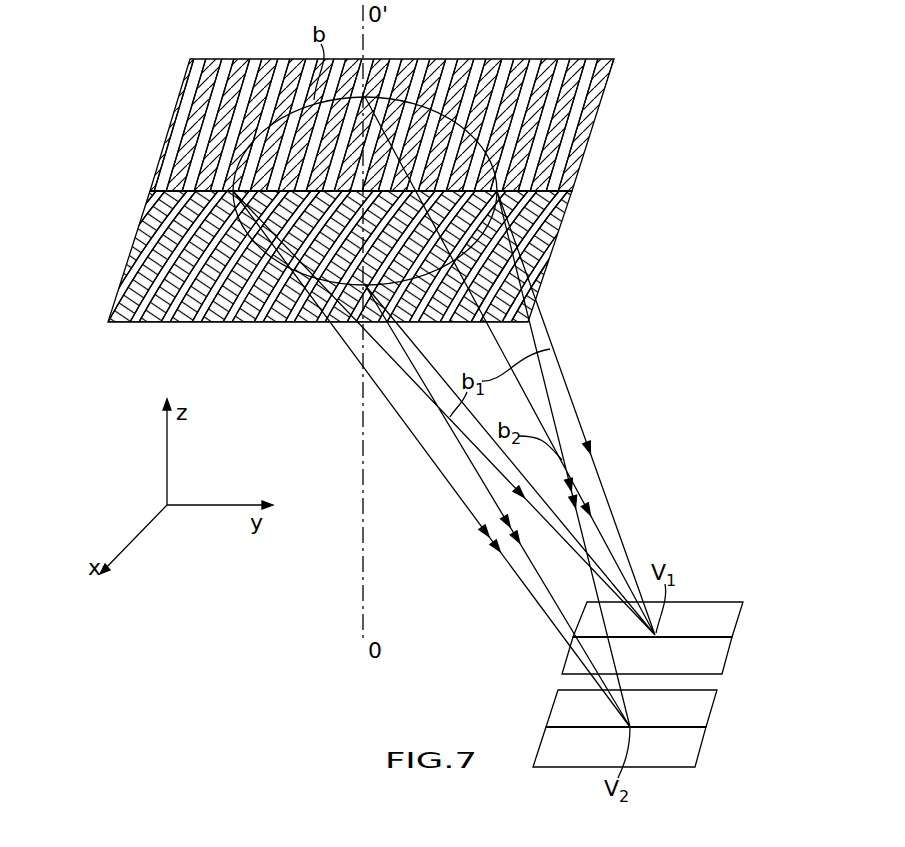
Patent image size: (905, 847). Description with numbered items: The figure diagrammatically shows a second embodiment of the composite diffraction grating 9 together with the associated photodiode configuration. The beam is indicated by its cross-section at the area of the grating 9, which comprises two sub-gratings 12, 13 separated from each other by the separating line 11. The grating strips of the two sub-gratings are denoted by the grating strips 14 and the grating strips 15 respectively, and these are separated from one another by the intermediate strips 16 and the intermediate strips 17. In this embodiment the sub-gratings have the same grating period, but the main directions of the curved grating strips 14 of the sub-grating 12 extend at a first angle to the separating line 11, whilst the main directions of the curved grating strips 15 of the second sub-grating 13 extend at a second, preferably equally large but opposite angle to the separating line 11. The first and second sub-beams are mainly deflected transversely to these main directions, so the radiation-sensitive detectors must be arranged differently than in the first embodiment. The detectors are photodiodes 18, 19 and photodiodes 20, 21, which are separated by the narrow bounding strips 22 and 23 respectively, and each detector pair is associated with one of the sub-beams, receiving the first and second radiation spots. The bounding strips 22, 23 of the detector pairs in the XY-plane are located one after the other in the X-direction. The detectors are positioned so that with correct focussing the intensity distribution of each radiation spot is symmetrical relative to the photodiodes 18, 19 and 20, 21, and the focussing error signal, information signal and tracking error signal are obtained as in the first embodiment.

The grating 9 is at (535, 54).
The separating line 11 is at (151, 190).
The sub-grating 12 is at (178, 103).
The sub-grating 13 is at (119, 292).
The grating strips 14 is at (419, 60).
The grating strips 15 is at (231, 323).
The intermediate strips 16 is at (462, 62).
The intermediate strips 17 is at (275, 323).
The photodiode 18 is at (727, 615).
The photodiode 19 is at (712, 660).
The photodiode 20 is at (700, 702).
The photodiode 21 is at (682, 752).
The bounding strip 22 is at (720, 634).
The bounding strip 23 is at (692, 723).